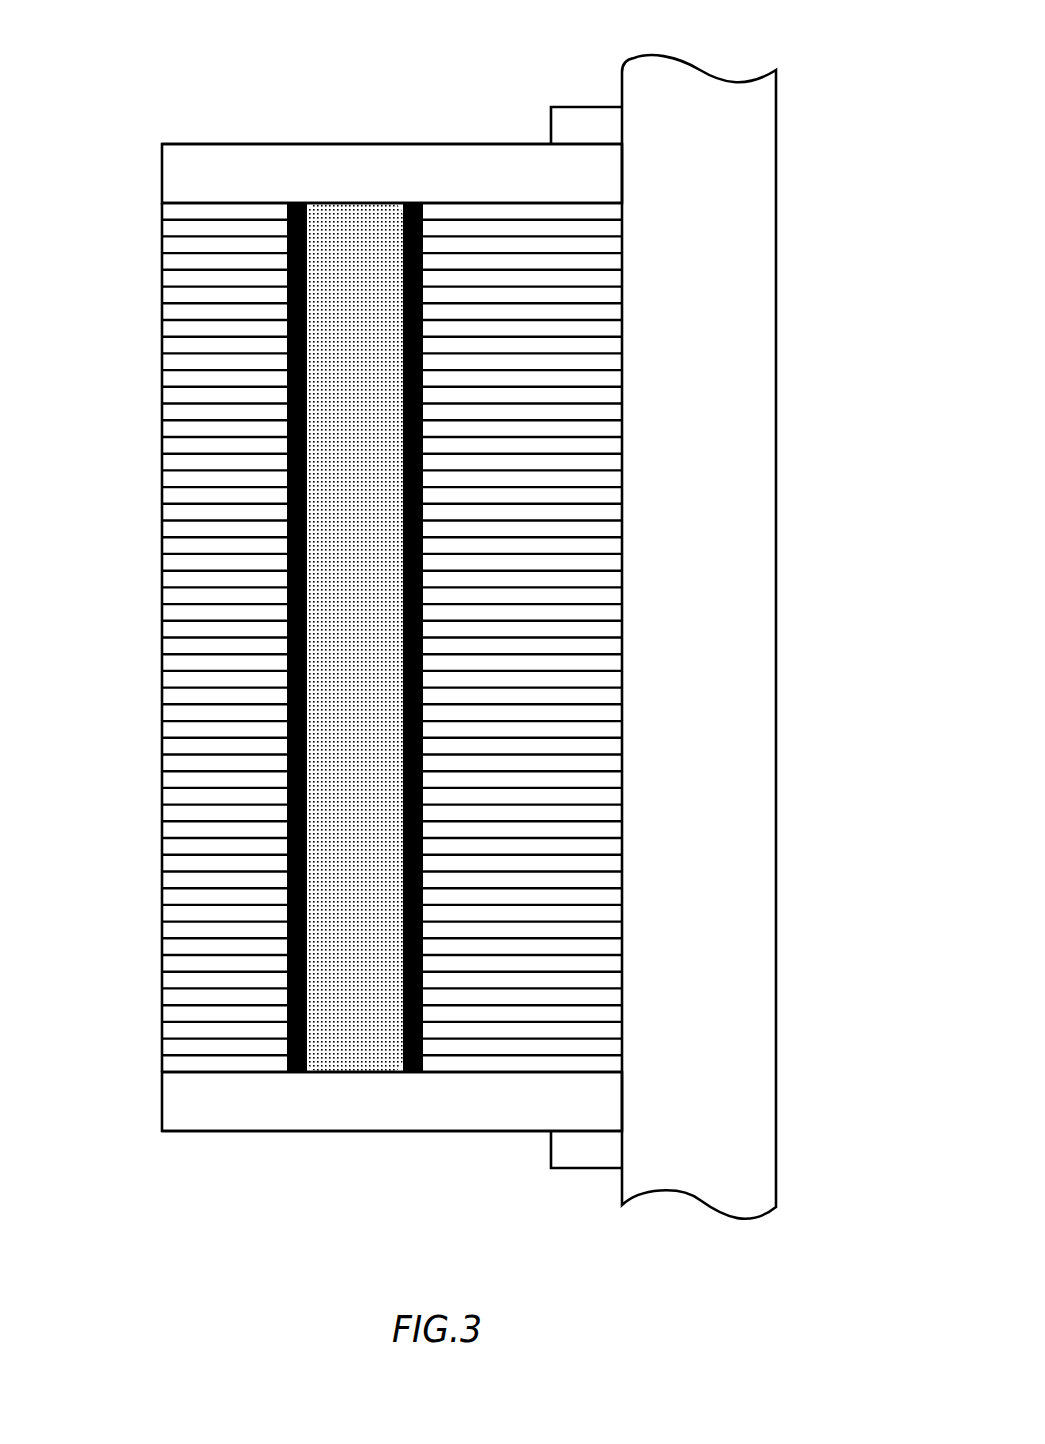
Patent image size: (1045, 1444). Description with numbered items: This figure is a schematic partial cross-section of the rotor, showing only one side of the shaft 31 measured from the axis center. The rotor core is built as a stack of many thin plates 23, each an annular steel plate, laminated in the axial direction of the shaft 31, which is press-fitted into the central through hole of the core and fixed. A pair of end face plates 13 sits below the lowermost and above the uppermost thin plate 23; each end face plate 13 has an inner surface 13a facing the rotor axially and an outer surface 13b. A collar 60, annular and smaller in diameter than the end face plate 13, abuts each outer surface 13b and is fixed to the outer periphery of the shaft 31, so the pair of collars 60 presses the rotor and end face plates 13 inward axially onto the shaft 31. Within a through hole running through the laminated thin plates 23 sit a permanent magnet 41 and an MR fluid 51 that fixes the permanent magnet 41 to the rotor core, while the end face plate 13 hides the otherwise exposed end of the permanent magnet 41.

The end face plate 13 is at (161, 176).
The inner surface 13a is at (187, 205).
The outer surface 13b is at (392, 143).
The thin plate 23 is at (173, 414).
The permanent magnet 41 is at (288, 330).
The MR fluid 51 is at (294, 380).
The collar 60 is at (586, 106).
The shaft 31 is at (697, 85).